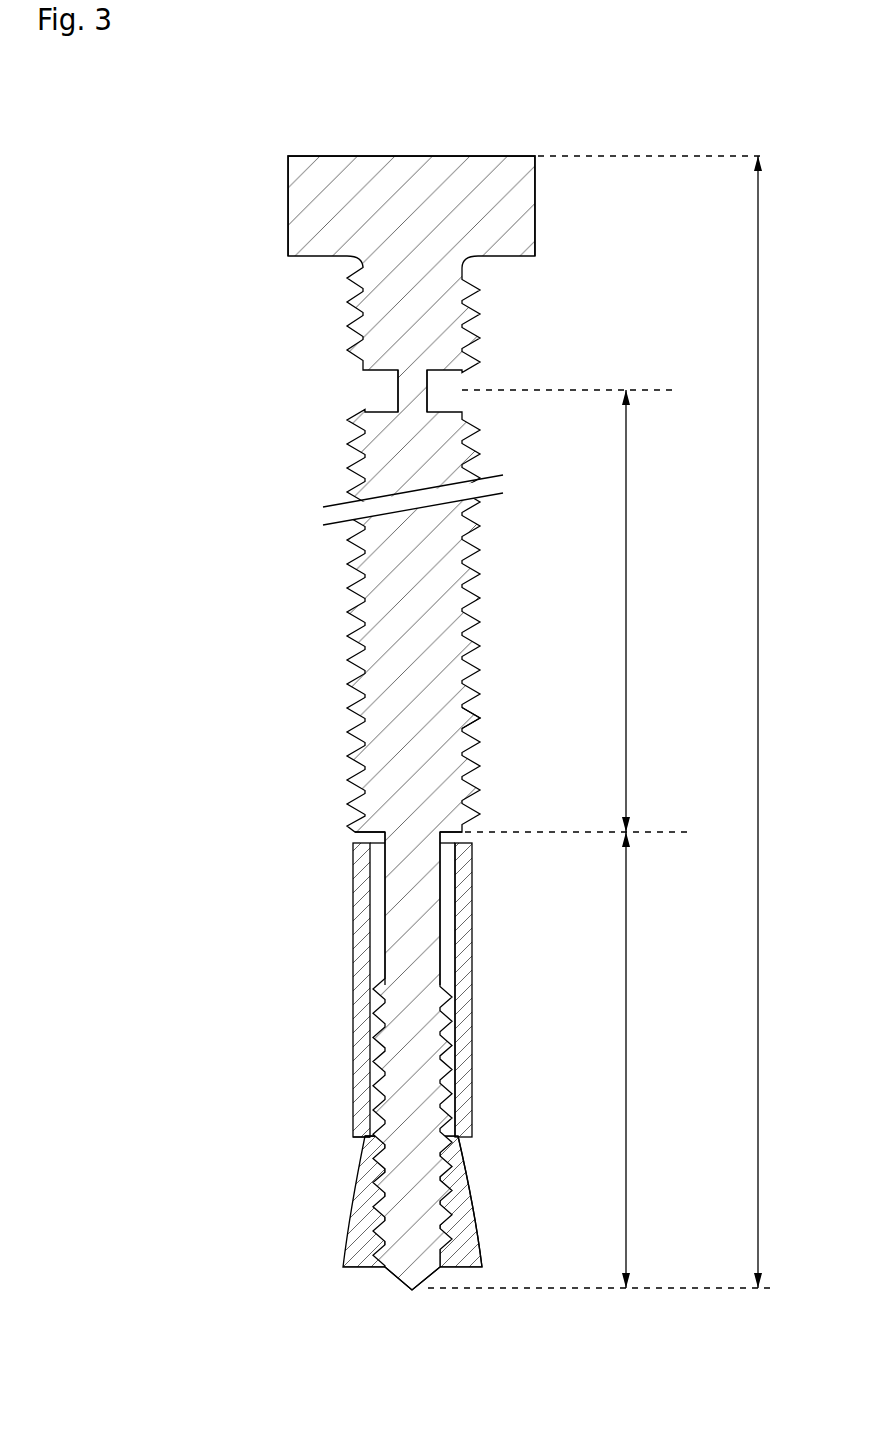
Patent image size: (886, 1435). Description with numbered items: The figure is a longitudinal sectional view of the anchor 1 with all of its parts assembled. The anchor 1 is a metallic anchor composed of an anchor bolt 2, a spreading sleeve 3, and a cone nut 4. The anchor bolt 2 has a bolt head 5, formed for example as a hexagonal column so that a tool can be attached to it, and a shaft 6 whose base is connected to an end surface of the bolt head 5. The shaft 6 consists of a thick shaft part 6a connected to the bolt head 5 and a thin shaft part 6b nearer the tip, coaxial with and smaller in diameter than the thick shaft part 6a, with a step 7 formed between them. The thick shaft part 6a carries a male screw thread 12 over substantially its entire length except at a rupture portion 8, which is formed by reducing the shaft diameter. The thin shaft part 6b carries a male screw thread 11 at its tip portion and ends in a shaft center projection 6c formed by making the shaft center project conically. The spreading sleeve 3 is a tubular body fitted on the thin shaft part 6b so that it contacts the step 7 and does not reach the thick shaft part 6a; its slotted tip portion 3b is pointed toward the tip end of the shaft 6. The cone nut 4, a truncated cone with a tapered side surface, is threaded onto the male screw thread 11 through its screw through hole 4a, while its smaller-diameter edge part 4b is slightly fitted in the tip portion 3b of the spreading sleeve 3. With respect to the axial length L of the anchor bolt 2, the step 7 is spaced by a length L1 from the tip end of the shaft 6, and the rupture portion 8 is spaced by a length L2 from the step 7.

The anchor 1 is at (140, 100).
The anchor bolt 2 is at (311, 723).
The spreading sleeve 3 is at (472, 928).
The tip portion 3b is at (352, 1147).
The cone nut 4 is at (475, 1192).
The screw through hole 4a is at (445, 1226).
The smaller-diameter edge part 4b is at (372, 1137).
The bolt head 5 is at (536, 196).
The shaft 6 is at (268, 468).
The thick shaft part 6a is at (385, 554).
The thin shaft part 6b is at (403, 922).
The shaft center projection 6c is at (410, 1288).
The step 7 is at (355, 834).
The rupture portion 8 is at (397, 388).
The male screw thread 11 is at (455, 1090).
The male screw thread 12 is at (475, 714).
The length L is at (758, 530).
The length L1 is at (628, 978).
The length L2 is at (626, 565).